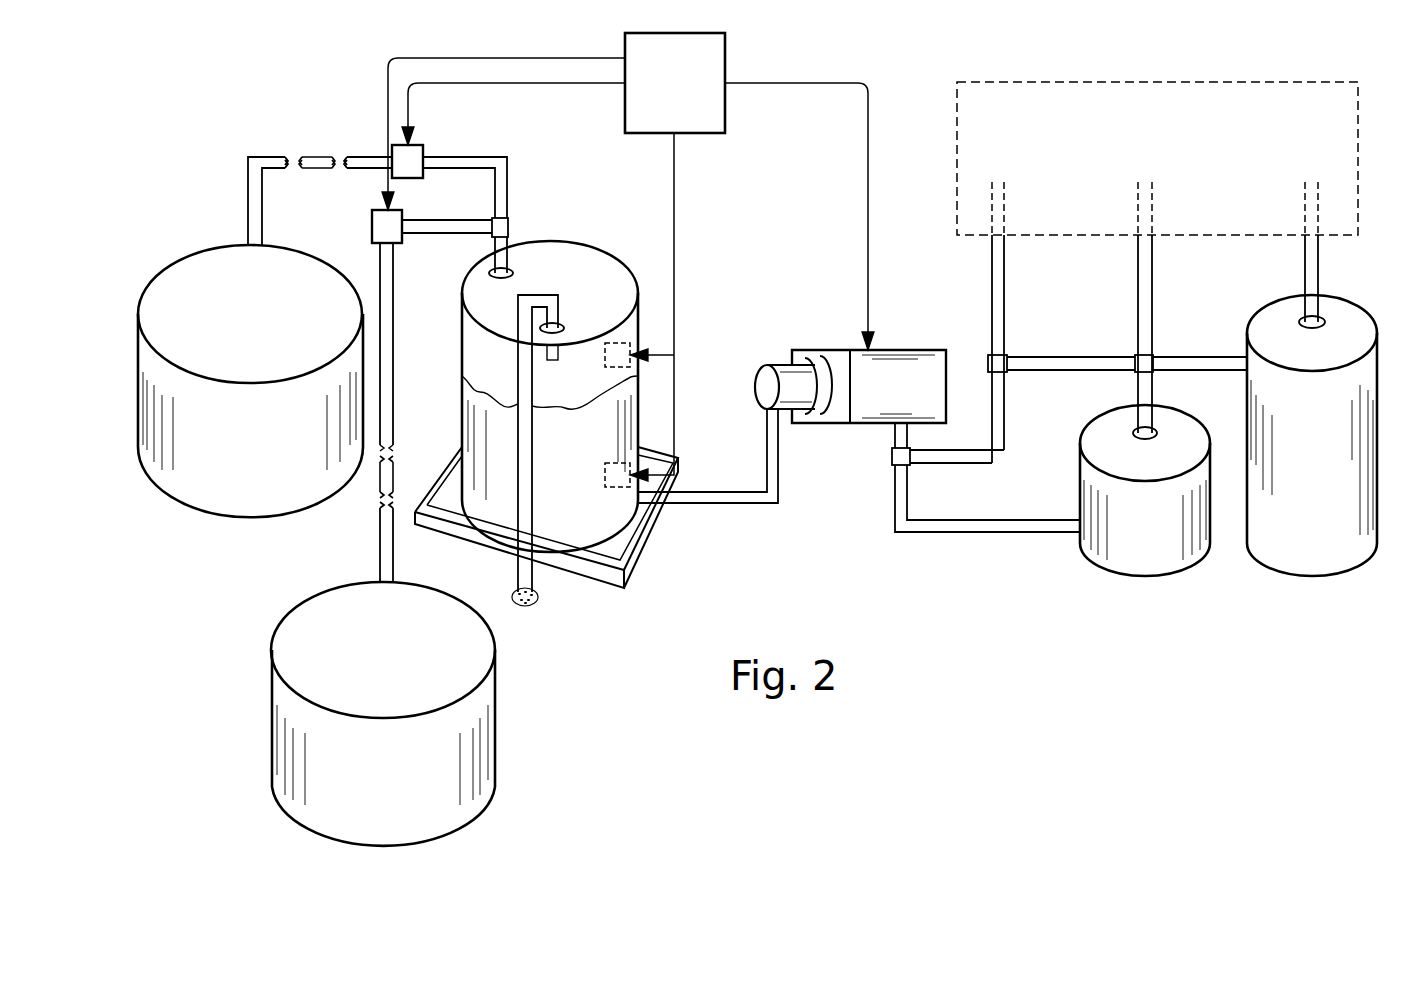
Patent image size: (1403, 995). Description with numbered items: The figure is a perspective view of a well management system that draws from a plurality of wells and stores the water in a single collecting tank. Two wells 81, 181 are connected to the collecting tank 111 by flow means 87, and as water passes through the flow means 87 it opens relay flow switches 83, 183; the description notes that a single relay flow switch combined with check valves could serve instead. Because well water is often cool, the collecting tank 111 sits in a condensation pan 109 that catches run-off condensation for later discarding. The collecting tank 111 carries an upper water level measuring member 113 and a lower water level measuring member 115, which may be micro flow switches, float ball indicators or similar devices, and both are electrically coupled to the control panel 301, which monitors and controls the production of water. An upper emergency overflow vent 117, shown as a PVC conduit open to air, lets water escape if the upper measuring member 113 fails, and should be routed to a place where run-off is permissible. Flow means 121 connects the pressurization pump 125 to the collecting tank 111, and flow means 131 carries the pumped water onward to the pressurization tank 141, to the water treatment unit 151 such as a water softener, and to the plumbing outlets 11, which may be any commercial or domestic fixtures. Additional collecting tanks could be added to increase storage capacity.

The plumbing outlets 11 is at (1171, 133).
The well 81 is at (253, 517).
The relay flow switch 83 is at (423, 148).
The flow means 87 is at (507, 202).
The condensation pan 109 is at (563, 572).
The collecting tank 111 is at (458, 332).
The upper water level measuring member 113 is at (620, 342).
The lower water level measuring member 115 is at (617, 488).
The upper emergency overflow vent 117 is at (548, 295).
The flow means 121 is at (778, 499).
The pressurization pump 125 is at (899, 348).
The flow means 131 is at (893, 435).
The pressurization tank 141 is at (1145, 577).
The water treatment unit 151 is at (1312, 577).
The well 181 is at (272, 688).
The relay flow switch 183 is at (402, 244).
The control panel 301 is at (725, 46).